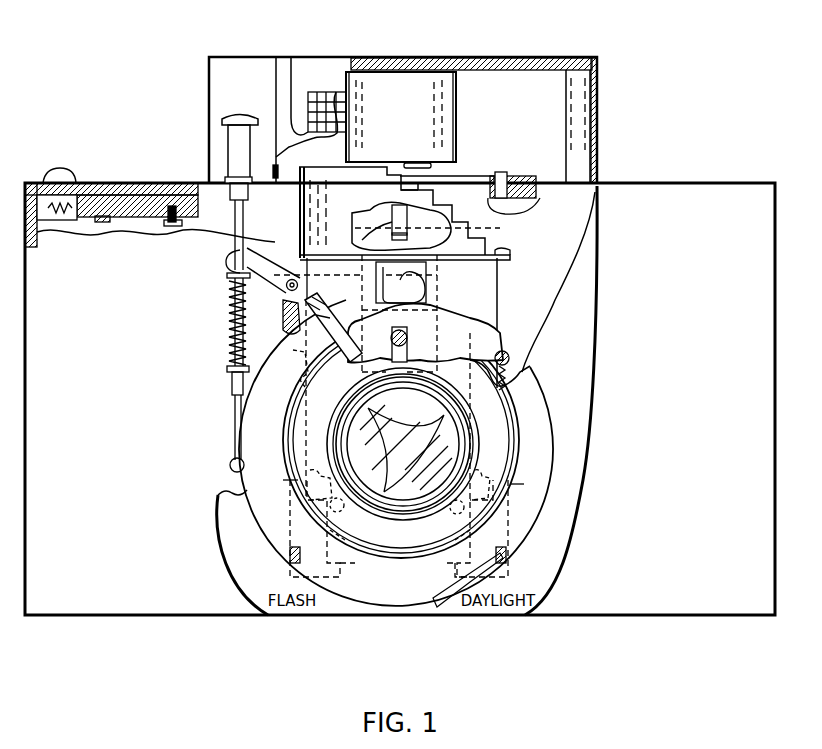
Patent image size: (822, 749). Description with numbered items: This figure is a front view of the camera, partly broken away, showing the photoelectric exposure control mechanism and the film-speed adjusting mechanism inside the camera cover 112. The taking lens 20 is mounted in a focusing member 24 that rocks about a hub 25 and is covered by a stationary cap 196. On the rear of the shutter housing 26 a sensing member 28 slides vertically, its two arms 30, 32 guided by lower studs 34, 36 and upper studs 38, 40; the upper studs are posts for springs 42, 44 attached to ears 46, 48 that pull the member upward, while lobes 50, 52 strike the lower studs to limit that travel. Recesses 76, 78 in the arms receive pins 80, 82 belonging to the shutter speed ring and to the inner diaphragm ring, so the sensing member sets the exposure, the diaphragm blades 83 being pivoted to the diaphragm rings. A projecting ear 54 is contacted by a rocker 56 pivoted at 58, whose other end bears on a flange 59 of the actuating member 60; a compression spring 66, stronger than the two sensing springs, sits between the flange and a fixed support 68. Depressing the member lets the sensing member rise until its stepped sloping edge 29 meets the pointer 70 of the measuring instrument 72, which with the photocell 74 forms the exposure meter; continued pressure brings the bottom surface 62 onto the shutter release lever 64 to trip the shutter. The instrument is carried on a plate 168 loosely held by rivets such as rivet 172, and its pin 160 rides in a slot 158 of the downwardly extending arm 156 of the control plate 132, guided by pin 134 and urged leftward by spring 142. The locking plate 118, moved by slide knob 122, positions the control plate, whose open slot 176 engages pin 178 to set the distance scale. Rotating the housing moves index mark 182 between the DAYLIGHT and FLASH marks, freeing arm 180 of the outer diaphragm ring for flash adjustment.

The taking lens 20 is at (389, 453).
The focusing member 24 is at (519, 432).
The hub 25 is at (470, 422).
The shutter housing 26 is at (556, 466).
The sensing member 28 is at (501, 262).
The sloping upper edge 29 is at (504, 250).
The arm 30 is at (340, 538).
The arm 32 is at (466, 536).
The lower stud 34 is at (341, 510).
The lower stud 36 is at (456, 512).
The upper stud 38 is at (296, 326).
The upper stud 40 is at (504, 351).
The spring 42 is at (300, 377).
The spring 44 is at (510, 379).
The ear 46 is at (290, 557).
The ear 48 is at (506, 560).
The lobe 50 is at (340, 566).
The lobe 52 is at (458, 566).
The projecting ear 54 is at (432, 308).
The rocker 56 is at (280, 263).
The pivot 58 is at (287, 287).
The flange 59 is at (227, 276).
The camera actuating member 60 is at (232, 155).
The bottom surface 62 is at (234, 410).
The shutter release lever 64 is at (230, 470).
The compression spring 66 is at (232, 352).
The fixed support 68 is at (234, 393).
The pointer 70 is at (432, 165).
The measuring instrument 72 is at (390, 119).
The photocell 74 is at (318, 95).
The recess 76 is at (278, 480).
The recess 78 is at (529, 483).
The pin 80 is at (319, 476).
The pin 82 is at (481, 476).
The diaphragm blade 83 is at (403, 414).
The camera cover 112 is at (655, 558).
The locking plate 118 is at (95, 196).
The slide knob 122 is at (62, 175).
The control plate 132 is at (376, 226).
The pin 134 is at (166, 228).
The spring 142 is at (55, 234).
The downwardly extending arm 156 is at (352, 236).
The slot 158 is at (392, 215).
The pin 160 is at (420, 208).
The plate 168 is at (476, 176).
The rivet 172 is at (512, 176).
The open slot 176 is at (409, 349).
The pin 178 is at (408, 338).
The arm 180 is at (234, 320).
The index mark 182 is at (452, 596).
The stationary cap 196 is at (293, 428).